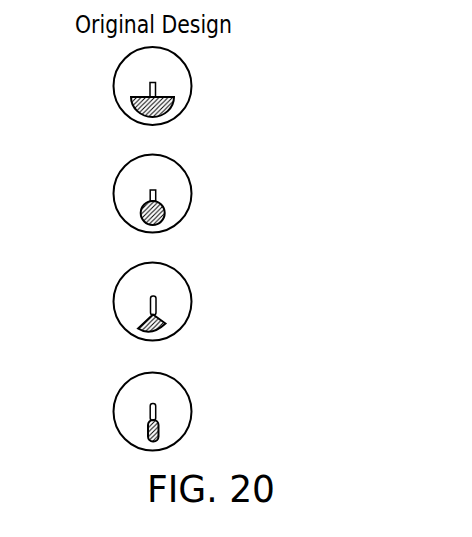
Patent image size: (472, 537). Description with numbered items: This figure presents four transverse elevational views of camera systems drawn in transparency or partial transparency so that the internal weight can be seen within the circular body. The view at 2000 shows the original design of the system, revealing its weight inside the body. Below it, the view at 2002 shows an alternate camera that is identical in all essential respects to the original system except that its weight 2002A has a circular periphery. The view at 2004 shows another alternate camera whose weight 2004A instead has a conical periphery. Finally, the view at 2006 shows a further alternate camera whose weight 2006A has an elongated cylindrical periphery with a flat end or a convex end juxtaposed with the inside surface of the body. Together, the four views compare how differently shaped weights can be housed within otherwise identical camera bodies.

The transverse elevational view of the system 2000 is at (216, 88).
The transverse elevational view of alternate camera 2002 is at (221, 197).
The weight 2002A is at (165, 212).
The transverse elevational view of alternate camera 2004 is at (221, 302).
The weight 2004A is at (157, 312).
The transverse elevational view of alternate camera 2006 is at (221, 412).
The weight 2006A is at (158, 425).